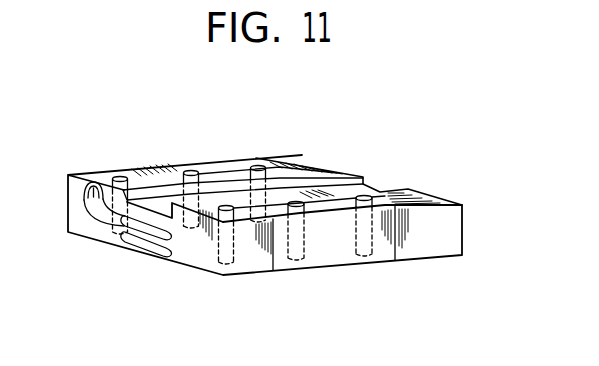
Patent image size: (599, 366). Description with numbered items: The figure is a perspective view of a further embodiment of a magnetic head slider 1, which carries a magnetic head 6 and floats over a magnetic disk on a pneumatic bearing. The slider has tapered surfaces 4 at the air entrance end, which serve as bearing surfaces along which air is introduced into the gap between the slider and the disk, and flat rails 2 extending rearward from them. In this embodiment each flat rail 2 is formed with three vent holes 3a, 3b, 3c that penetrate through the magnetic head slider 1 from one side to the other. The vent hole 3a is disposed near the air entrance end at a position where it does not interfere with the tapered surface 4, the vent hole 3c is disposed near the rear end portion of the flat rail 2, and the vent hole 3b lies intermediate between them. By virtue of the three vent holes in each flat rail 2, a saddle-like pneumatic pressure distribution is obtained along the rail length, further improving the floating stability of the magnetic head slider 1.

The magnetic head slider 1 is at (393, 260).
The flat rail 2 is at (233, 157).
The vent hole 3a is at (260, 167).
The vent hole 3b is at (191, 171).
The vent hole 3c is at (122, 177).
The tapered surface 4 is at (318, 163).
The magnetic head 6 is at (90, 181).